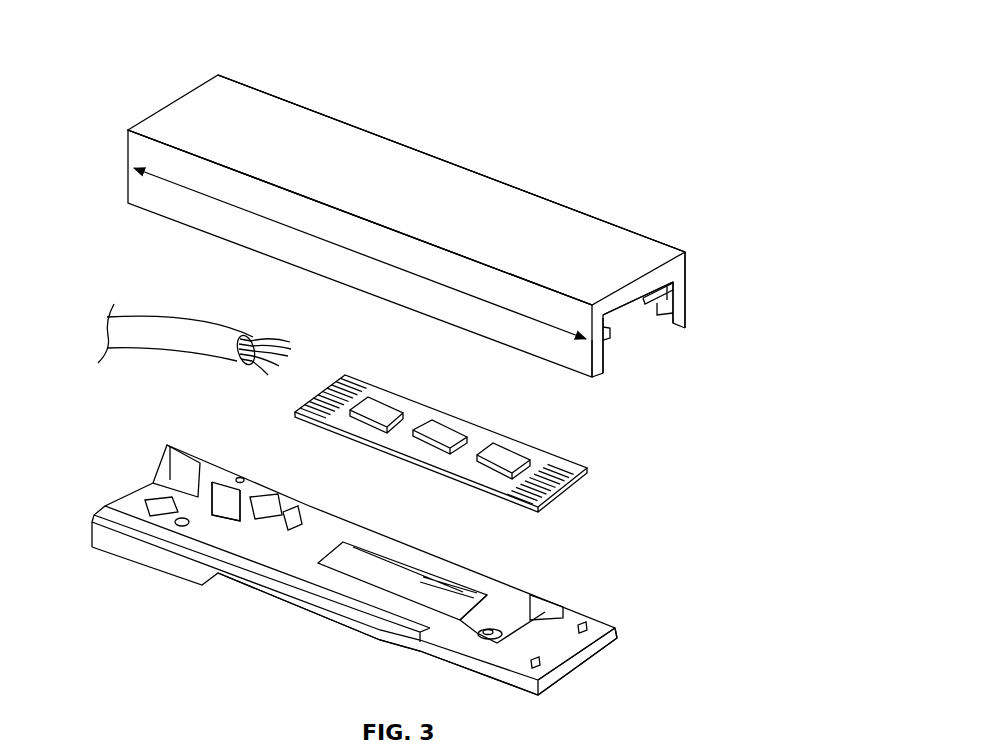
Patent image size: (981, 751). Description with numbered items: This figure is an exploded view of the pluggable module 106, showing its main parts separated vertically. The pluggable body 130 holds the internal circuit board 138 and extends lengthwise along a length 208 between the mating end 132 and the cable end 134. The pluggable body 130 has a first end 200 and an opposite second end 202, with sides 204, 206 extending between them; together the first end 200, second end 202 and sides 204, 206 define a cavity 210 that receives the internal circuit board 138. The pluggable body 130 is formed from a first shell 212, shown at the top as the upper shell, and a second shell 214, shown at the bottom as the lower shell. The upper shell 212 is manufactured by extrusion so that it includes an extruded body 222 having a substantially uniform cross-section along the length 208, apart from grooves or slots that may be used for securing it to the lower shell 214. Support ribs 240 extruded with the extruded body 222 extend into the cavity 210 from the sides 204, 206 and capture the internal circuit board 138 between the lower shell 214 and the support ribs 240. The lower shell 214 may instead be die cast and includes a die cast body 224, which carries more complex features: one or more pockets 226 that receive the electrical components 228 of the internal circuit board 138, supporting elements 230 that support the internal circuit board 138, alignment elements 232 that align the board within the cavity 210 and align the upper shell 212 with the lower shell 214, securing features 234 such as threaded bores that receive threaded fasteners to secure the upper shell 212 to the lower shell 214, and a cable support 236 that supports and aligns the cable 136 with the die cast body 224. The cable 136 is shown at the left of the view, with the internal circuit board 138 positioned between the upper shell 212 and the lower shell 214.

The pluggable module 106 is at (558, 37).
The cable end 134 is at (168, 83).
The first shell 212 is at (443, 149).
The first end 200 is at (525, 218).
The length 208 is at (337, 245).
The extruded body 222 is at (640, 288).
The mating end 132 is at (694, 262).
The support ribs 240 is at (659, 310).
The pluggable body 130 is at (692, 310).
The side 206 is at (673, 322).
The cavity 210 is at (639, 339).
The side 204 is at (598, 363).
The cable 136 is at (173, 338).
The internal circuit board 138 is at (560, 463).
The electrical components 228 is at (502, 460).
The second shell 214 is at (303, 611).
The second end 202 is at (563, 668).
The die cast body 224 is at (587, 650).
The cable support 236 is at (231, 501).
The alignment elements 232 is at (293, 515).
The securing features 234 is at (488, 624).
The pockets 226 is at (502, 600).
The supporting elements 230 is at (528, 612).